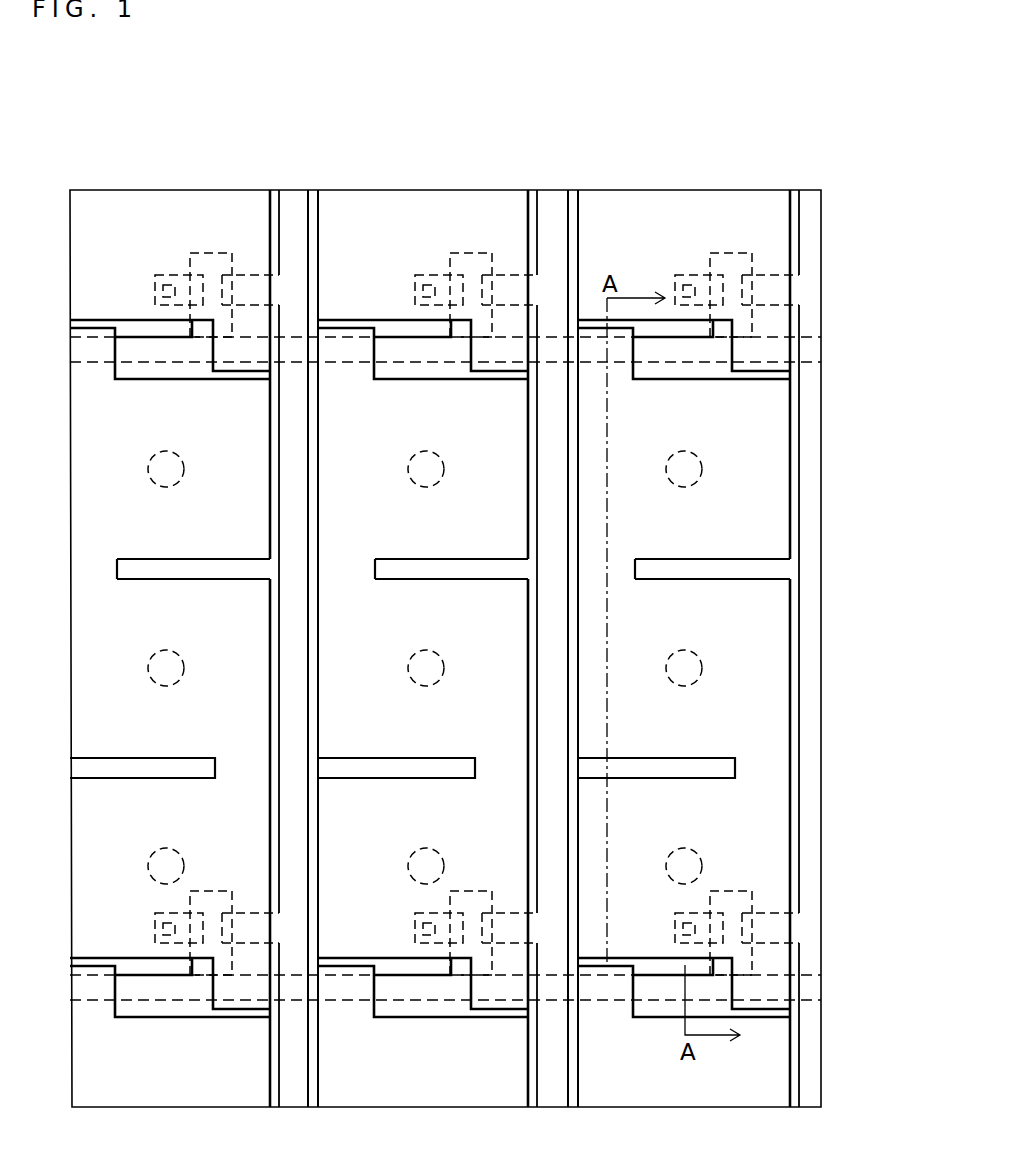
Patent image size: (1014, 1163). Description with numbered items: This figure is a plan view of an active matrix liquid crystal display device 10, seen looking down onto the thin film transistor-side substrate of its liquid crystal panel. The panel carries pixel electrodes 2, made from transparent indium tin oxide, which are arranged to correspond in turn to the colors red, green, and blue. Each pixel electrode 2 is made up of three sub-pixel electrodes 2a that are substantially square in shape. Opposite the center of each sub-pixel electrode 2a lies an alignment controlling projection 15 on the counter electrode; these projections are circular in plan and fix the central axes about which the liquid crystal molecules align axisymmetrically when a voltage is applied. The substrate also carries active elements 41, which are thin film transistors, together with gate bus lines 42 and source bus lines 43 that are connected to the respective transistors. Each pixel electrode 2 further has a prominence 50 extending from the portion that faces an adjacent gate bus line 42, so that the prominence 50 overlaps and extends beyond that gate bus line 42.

The active matrix liquid crystal display device 10 is at (803, 163).
The pixel electrode 2 is at (775, 545).
The sub-pixel electrode 2a is at (737, 468).
The alignment controlling projection 15 is at (697, 483).
The active element 41 is at (209, 250).
The gate bus line 42 is at (808, 352).
The source bus line 43 is at (290, 205).
The prominence 50 is at (585, 336).